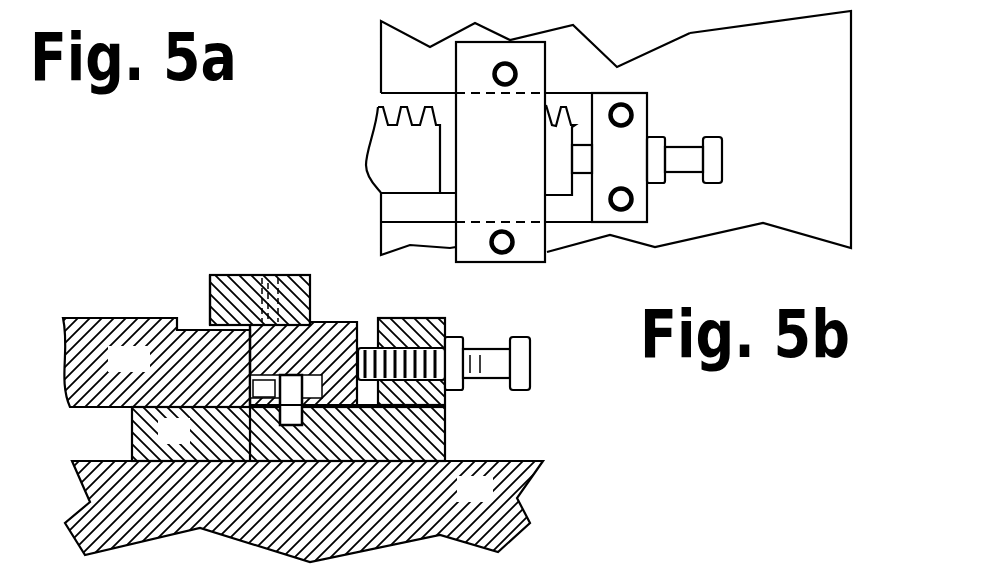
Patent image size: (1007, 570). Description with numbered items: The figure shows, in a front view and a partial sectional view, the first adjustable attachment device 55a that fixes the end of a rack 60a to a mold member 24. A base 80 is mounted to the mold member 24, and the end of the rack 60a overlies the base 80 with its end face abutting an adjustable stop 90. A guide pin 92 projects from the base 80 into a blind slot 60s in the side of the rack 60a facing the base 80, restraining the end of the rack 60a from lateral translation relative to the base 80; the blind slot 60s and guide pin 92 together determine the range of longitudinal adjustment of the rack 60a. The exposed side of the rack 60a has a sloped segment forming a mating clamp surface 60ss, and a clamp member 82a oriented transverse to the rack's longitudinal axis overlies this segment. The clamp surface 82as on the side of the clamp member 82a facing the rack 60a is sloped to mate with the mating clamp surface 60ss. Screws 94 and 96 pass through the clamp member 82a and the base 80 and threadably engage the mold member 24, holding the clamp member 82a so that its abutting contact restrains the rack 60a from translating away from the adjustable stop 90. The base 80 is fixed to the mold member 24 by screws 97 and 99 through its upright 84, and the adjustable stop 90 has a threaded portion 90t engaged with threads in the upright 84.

In FIG. 5A, the mold member 24 is at (783, 164).
In FIG. 5B, the mold member 24 is at (461, 498).
In FIG. 5A, the first adjustable attachment device 55a is at (364, 43).
In FIG. 5B, the first adjustable attachment device 55a is at (116, 251).
In FIG. 5A, the rack 60a is at (390, 164).
In FIG. 5B, the rack 60a is at (110, 369).
In FIG. 5B, the blind slot 60s is at (312, 378).
In FIG. 5A, the mating clamp surface 60ss is at (562, 127).
In FIG. 5B, the mating clamp surface 60ss is at (325, 320).
In FIG. 5B, the base 80 is at (160, 441).
In FIG. 5A, the clamp member 82a is at (472, 57).
In FIG. 5B, the clamp member 82a is at (302, 276).
In FIG. 5B, the clamp surface 82as is at (209, 300).
In FIG. 5B, the upright 84 is at (443, 318).
In FIG. 5A, the adjustable stop 90 is at (717, 150).
In FIG. 5B, the adjustable stop 90 is at (515, 360).
In FIG. 5B, the threaded portion 90t is at (476, 364).
In FIG. 5B, the guide pin 92 is at (286, 403).
In FIG. 5A, the screw 94 is at (505, 72).
In FIG. 5B, the screw 94 is at (267, 282).
In FIG. 5A, the screw 96 is at (504, 243).
In FIG. 5A, the screw 97 is at (623, 106).
In FIG. 5B, the screw 97 is at (410, 322).
In FIG. 5A, the screw 99 is at (622, 203).